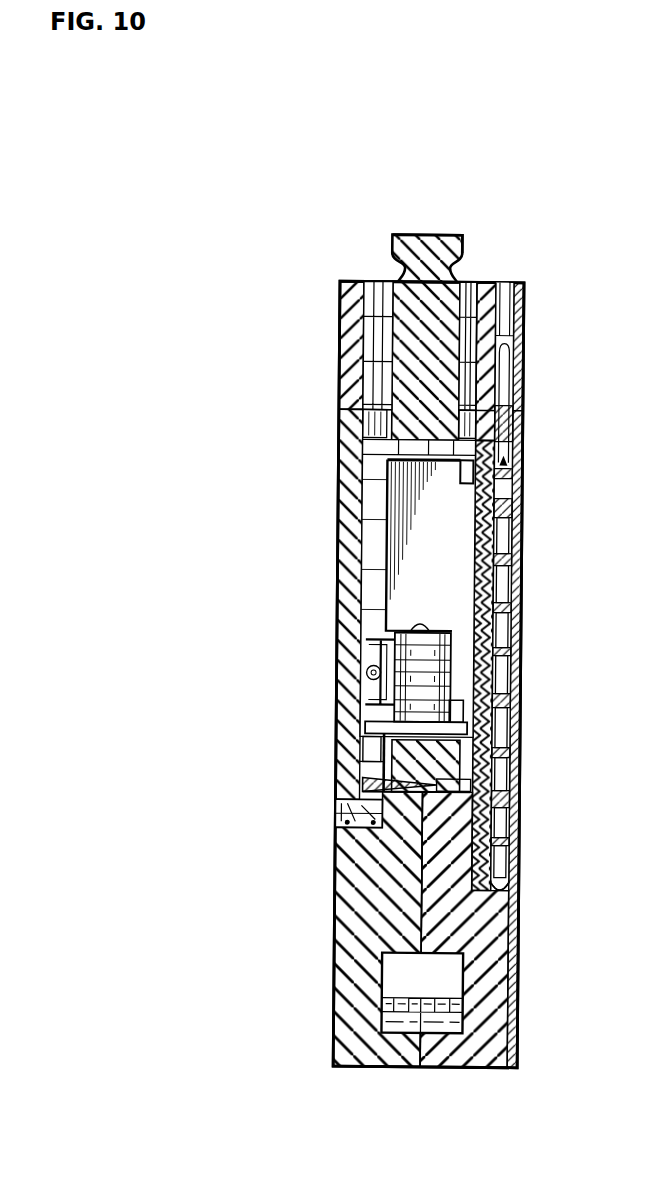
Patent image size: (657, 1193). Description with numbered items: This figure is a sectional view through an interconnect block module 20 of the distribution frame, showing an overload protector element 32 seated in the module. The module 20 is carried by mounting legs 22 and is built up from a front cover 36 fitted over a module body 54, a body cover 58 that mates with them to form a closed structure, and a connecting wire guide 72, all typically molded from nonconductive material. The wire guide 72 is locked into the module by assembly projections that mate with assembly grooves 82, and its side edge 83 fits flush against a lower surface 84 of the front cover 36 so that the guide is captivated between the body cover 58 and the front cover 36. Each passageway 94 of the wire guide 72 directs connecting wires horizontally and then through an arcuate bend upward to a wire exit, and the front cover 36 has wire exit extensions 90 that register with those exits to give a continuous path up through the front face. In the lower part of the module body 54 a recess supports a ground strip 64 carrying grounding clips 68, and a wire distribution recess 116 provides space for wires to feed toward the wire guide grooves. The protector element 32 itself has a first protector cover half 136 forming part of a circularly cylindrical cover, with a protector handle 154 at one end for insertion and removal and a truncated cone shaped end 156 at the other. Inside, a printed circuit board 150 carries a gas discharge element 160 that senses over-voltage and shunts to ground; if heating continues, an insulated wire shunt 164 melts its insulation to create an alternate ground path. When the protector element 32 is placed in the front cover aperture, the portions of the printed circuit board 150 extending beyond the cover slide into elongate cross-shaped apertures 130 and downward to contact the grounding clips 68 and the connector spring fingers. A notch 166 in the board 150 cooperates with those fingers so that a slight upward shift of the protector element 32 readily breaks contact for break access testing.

The interconnect block module 20 is at (278, 938).
The mounting legs 22 is at (333, 1020).
The overload protector element 32 is at (400, 222).
The front cover 36 is at (340, 324).
The module body 54 is at (340, 878).
The body cover 58 is at (521, 935).
The ground strip 64 is at (523, 812).
The grounding clips 68 is at (515, 862).
The connecting wire guide 72 is at (521, 637).
The assembly grooves 82 is at (509, 905).
The side edge 83 is at (516, 412).
The lower surface 84 is at (516, 410).
The wire exit extensions 90 is at (505, 320).
The passageway 94 is at (503, 580).
The wire distribution recess 116 is at (367, 827).
The cross-shaped apertures 130 is at (378, 355).
The first protector cover half 136 is at (455, 292).
The printed circuit board 150 is at (449, 589).
The protector handle 154 is at (449, 240).
The truncated cone shaped end 156 is at (365, 778).
The gas discharge element 160 is at (421, 659).
The insulated wire shunt 164 is at (342, 694).
The notch 166 is at (472, 477).